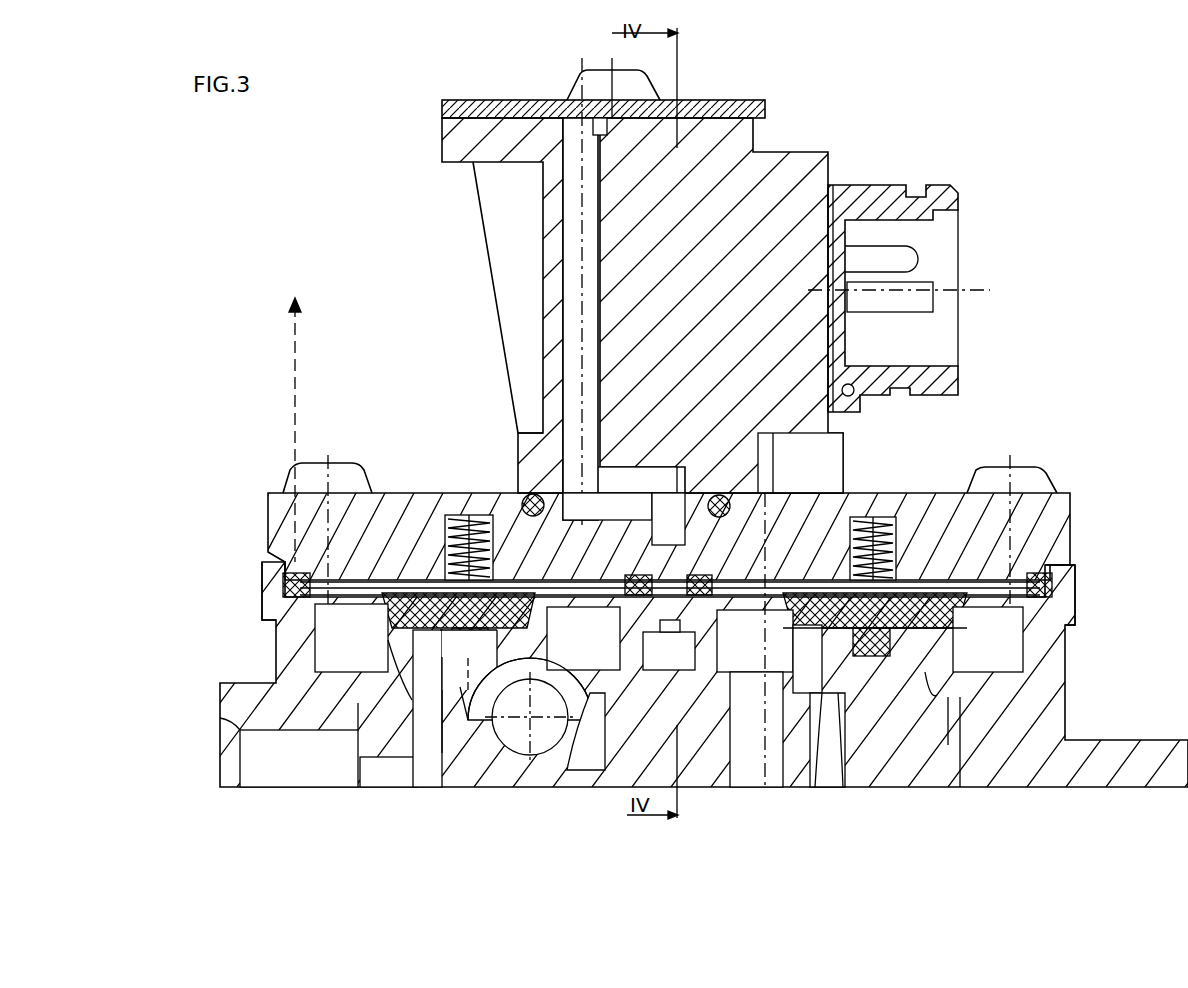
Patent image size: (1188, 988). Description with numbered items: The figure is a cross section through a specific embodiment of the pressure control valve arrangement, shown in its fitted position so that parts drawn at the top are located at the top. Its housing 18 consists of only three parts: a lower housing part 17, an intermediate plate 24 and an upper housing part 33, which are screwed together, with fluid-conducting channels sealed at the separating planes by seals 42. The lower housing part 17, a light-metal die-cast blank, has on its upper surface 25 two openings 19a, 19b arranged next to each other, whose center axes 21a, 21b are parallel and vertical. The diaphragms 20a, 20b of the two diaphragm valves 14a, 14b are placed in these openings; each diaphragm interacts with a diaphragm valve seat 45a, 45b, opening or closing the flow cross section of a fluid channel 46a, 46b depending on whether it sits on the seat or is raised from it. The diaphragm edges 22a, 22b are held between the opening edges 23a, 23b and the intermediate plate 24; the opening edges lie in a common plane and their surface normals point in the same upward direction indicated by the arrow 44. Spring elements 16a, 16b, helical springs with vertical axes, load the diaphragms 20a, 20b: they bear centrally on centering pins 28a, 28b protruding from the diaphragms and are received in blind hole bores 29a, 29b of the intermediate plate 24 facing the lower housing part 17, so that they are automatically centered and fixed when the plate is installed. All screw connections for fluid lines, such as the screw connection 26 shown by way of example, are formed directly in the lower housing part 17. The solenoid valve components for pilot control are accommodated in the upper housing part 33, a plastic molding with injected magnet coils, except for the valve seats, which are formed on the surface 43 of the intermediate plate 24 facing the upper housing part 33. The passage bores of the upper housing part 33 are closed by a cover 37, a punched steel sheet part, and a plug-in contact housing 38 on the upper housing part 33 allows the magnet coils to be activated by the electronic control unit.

The diaphragm valve 14a is at (424, 478).
The diaphragm valve 14b is at (911, 478).
The spring element 16a is at (456, 598).
The spring element 16b is at (922, 597).
The lower housing part 17 is at (1055, 697).
The housing 18 is at (1104, 333).
The opening 19a is at (343, 642).
The opening 19b is at (1010, 655).
The diaphragm 20a is at (398, 598).
The diaphragm 20b is at (965, 597).
The center axis 21a is at (470, 493).
The center axis 21b is at (873, 493).
The diaphragm edge 22a is at (300, 573).
The diaphragm edge 22b is at (1045, 558).
The opening edge 23a is at (300, 595).
The opening edge 23b is at (1048, 602).
The intermediate plate 24 is at (282, 505).
The upper surface 25 is at (662, 560).
The screw connection 26 is at (233, 757).
The centering pin 28a is at (441, 640).
The centering pin 28b is at (837, 680).
The blind hole bore 29a is at (412, 700).
The blind hole bore 29b is at (937, 695).
The upper housing part 33 is at (789, 168).
The cover 37 is at (455, 106).
The plug-in contact housing 38 is at (950, 197).
The seal 42 is at (521, 495).
The surface of the intermediate plate 43 is at (405, 492).
The arrow 44 is at (294, 352).
The diaphragm valve seat 45a is at (358, 702).
The diaphragm valve seat 45b is at (948, 690).
The fluid channel 46a is at (460, 687).
The fluid channel 46b is at (823, 693).